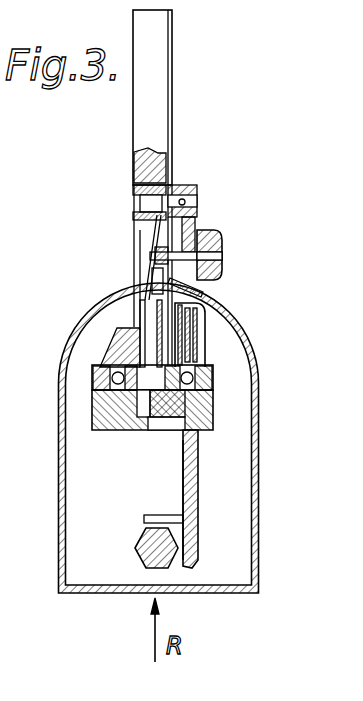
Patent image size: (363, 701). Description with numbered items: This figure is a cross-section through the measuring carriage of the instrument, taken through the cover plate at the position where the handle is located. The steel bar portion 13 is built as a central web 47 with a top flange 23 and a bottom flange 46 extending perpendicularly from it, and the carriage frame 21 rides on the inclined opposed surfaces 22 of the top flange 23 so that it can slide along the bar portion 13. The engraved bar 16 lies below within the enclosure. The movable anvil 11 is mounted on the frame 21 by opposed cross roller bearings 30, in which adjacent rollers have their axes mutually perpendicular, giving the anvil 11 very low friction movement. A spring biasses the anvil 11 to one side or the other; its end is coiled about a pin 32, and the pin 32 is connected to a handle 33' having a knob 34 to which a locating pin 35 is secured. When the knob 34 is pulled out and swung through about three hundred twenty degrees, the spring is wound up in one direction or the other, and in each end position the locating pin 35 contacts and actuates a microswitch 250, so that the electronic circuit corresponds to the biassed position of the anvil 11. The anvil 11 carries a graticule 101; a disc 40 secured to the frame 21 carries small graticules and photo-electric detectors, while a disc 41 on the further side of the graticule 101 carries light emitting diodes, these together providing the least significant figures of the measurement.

The movable anvil 11 is at (160, 55).
The bar portion 13 is at (198, 484).
The bar 16 is at (153, 553).
The frame 21 is at (108, 410).
The inclined opposed surfaces 22 is at (137, 430).
The top flange 23 is at (170, 428).
The cross roller bearings 30 is at (100, 328).
The pin 32 is at (172, 182).
The handle 33' is at (201, 213).
The knob 34 is at (214, 286).
The locating pin 35 is at (222, 255).
The disc 40 is at (200, 328).
The disc 41 is at (196, 336).
The bottom flange 46 is at (152, 514).
The central web 47 is at (190, 455).
The graticule 101 is at (133, 325).
The microswitch 250 is at (137, 300).